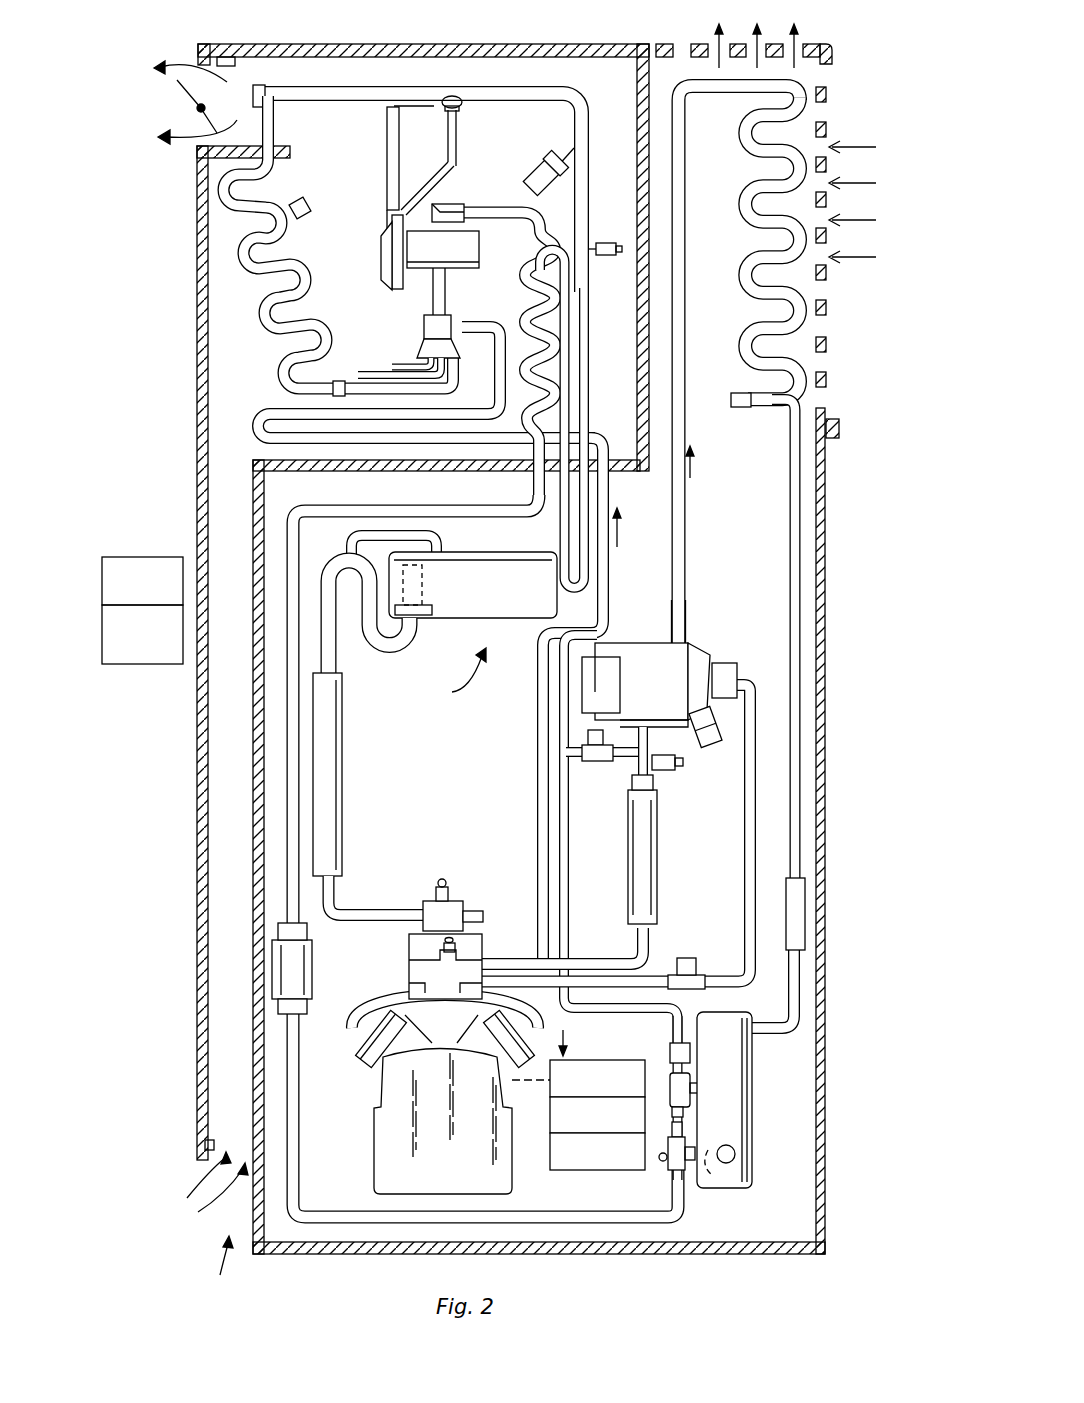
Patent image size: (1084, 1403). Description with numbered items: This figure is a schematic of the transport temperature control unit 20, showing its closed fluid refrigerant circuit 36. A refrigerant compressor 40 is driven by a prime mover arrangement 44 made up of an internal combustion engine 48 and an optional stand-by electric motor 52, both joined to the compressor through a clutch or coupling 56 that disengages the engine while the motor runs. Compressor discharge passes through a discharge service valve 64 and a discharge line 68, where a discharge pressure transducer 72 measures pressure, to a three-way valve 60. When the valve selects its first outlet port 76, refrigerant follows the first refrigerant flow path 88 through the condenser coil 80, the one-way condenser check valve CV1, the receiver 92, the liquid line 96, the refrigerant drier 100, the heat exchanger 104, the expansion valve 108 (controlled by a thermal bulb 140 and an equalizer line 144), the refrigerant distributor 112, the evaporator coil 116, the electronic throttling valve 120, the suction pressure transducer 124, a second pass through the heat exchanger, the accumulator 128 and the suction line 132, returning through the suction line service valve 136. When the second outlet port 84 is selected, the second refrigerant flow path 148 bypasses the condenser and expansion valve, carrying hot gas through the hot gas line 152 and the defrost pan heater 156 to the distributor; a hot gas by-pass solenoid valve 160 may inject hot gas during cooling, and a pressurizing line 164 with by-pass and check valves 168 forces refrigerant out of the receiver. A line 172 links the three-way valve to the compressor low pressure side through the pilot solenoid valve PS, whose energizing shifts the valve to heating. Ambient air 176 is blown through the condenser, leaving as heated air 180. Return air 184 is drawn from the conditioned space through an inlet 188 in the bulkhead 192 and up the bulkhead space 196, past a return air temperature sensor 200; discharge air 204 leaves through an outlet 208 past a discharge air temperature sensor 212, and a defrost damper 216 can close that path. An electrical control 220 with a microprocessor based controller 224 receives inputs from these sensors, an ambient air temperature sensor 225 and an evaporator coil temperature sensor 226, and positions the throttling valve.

The temperature control unit 20 is at (884, 650).
The closed fluid refrigerant circuit 36 is at (407, 637).
The refrigerant compressor 40 is at (375, 1150).
The prime mover arrangement 44 is at (543, 1043).
The internal combustion engine 48 is at (556, 1168).
The stand-by electric motor 52 is at (604, 1060).
The clutch or coupling 56 is at (550, 1104).
The three-way valve 60 is at (703, 645).
The discharge service valve 64 is at (410, 950).
The discharge line 68 is at (508, 956).
The discharge pressure transducer 72 is at (676, 772).
The first outlet port 76 is at (680, 635).
The condenser coil 80 is at (746, 222).
The second outlet port 84 is at (608, 642).
The first refrigerant flow path 88 is at (690, 466).
The receiver 92 is at (748, 1058).
The liquid line 96 is at (670, 1219).
The refrigerant drier 100 is at (312, 982).
The heat exchanger 104 is at (560, 363).
The expansion valve 108 is at (392, 262).
The refrigerant distributor 112 is at (424, 322).
The evaporator coil 116 is at (300, 272).
The electronic throttling valve 120 is at (522, 178).
The suction pressure transducer 124 is at (610, 243).
The accumulator 128 is at (490, 554).
The suction line 132 is at (352, 906).
The suction line service valve 136 is at (455, 904).
The thermal bulb 140 is at (417, 108).
The equalizer line 144 is at (457, 132).
The second refrigerant flow path 148 is at (617, 530).
The hot gas line 152 is at (610, 487).
The defrost pan heater 156 is at (262, 426).
The hot gas by-pass solenoid valve 160 is at (590, 764).
The by-pass or pressurizing line 164 is at (538, 782).
The by-pass and check valves 168 is at (684, 1108).
The conduit or line 172 is at (744, 860).
The ambient air 176 is at (876, 147).
The heated air 180 is at (770, 60).
The return air 184 is at (203, 1195).
The inlet 188 is at (211, 1268).
The bulkhead 192 is at (200, 946).
The bulkhead space 196 is at (210, 835).
The return air temperature sensor 200 is at (205, 1143).
The discharge air 204 is at (176, 102).
The outlet 208 is at (189, 58).
The discharge air temperature sensor 212 is at (228, 56).
The defrost damper 216 is at (208, 114).
The electrical control 220 is at (128, 665).
The microprocessor based controller 224 is at (120, 556).
The ambient air temperature sensor 225 is at (840, 426).
The evaporator coil temperature sensor 226 is at (303, 200).
The one-way condenser check valve CV1 is at (806, 908).
The pilot solenoid valve PS is at (688, 958).